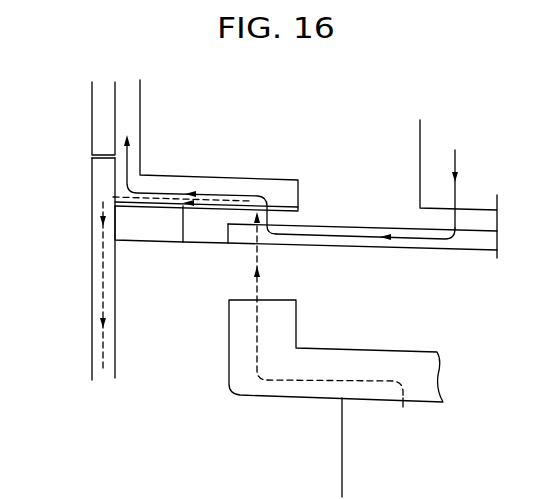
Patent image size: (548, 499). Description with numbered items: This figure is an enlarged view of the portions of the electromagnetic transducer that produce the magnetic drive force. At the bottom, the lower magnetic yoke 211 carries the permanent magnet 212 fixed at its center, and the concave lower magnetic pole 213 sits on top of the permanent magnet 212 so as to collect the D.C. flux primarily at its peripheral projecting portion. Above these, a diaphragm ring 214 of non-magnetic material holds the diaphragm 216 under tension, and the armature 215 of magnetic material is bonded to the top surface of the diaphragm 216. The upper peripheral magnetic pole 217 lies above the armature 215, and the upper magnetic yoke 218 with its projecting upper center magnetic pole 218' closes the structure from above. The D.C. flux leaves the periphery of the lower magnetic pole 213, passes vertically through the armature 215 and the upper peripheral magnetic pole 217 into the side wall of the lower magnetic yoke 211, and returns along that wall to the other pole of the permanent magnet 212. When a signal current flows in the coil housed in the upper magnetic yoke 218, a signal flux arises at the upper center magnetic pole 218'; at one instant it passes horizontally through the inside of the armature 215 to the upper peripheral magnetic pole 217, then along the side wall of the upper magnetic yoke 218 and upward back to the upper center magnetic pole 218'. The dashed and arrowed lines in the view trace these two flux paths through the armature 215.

The lower magnetic yoke 211 is at (98, 172).
The permanent magnet 212 is at (352, 458).
The lower magnetic pole 213 is at (238, 357).
The diaphragm ring 214 is at (144, 242).
The armature 215 is at (312, 230).
The diaphragm 216 is at (207, 243).
The upper peripheral magnetic pole 217 is at (140, 98).
The upper magnetic yoke 218 is at (75, 120).
The upper center magnetic pole 218' is at (475, 184).